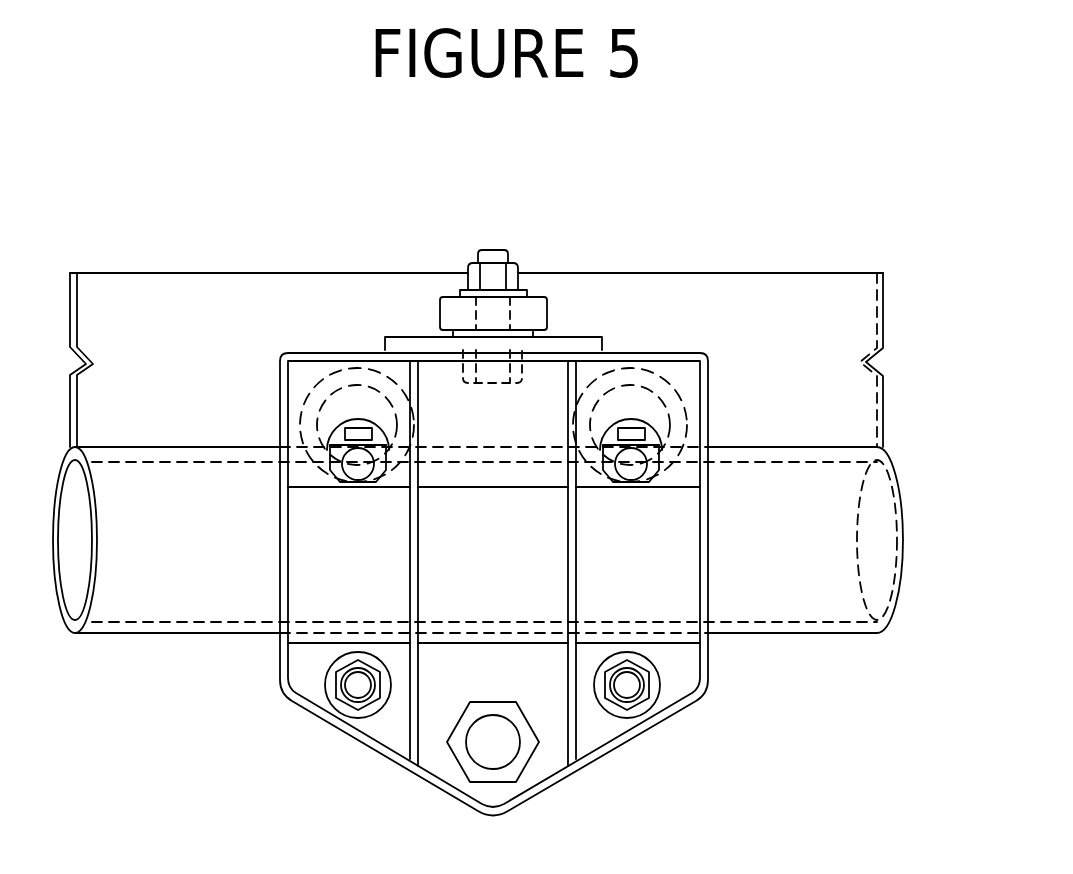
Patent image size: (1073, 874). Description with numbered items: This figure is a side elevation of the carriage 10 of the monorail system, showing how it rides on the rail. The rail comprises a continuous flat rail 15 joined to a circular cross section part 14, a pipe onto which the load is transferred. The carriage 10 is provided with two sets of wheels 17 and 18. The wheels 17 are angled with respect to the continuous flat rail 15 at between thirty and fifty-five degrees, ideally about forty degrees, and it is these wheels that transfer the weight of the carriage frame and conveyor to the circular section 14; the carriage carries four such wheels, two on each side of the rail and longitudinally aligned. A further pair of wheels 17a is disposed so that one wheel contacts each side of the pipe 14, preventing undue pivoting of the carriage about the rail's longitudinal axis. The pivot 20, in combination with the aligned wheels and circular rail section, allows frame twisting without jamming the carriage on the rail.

The carriage 10 is at (307, 675).
The circular cross section part of the monorail 14 is at (828, 532).
The continuous flat rail 15 is at (808, 310).
The wheels 17 is at (632, 402).
The further pair of wheels 17a is at (358, 402).
The wheels 18 is at (537, 312).
The pivot 20 is at (493, 742).